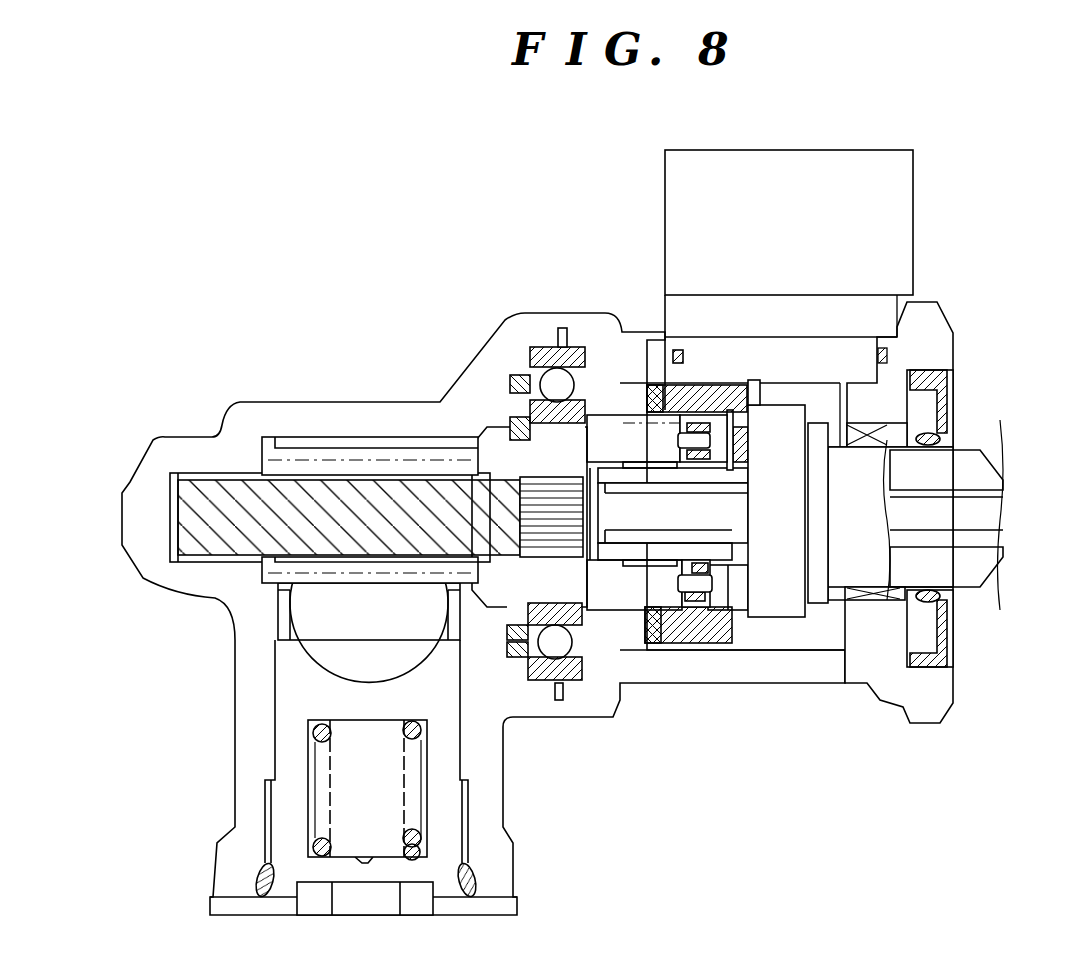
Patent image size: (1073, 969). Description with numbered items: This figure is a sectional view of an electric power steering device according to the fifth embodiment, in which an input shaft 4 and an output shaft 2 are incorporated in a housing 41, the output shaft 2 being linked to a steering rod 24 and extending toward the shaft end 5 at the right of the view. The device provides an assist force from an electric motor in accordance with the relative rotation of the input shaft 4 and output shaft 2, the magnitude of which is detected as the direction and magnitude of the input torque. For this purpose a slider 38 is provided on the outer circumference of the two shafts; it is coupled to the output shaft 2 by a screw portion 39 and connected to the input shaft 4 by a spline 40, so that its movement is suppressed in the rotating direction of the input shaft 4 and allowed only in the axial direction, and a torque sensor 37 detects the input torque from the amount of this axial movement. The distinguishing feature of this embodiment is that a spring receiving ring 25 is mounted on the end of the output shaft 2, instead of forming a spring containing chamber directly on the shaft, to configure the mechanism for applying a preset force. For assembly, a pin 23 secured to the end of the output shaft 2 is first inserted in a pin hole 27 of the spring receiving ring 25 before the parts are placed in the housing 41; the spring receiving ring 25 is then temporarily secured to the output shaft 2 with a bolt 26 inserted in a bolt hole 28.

The output shaft 2 is at (206, 493).
The steering rod 24 is at (343, 598).
The housing 41 is at (512, 313).
The screw portion 39 is at (652, 385).
The slider 38 is at (668, 335).
The spring receiving ring 25 is at (692, 420).
The spline 40 is at (758, 454).
The torque sensor 37 is at (905, 185).
The input shaft 4 is at (760, 437).
The pin 23 is at (735, 440).
The pin hole 27 is at (683, 470).
The bolt 26 is at (714, 586).
The bolt hole 28 is at (683, 608).
The output shaft 5 is at (997, 512).